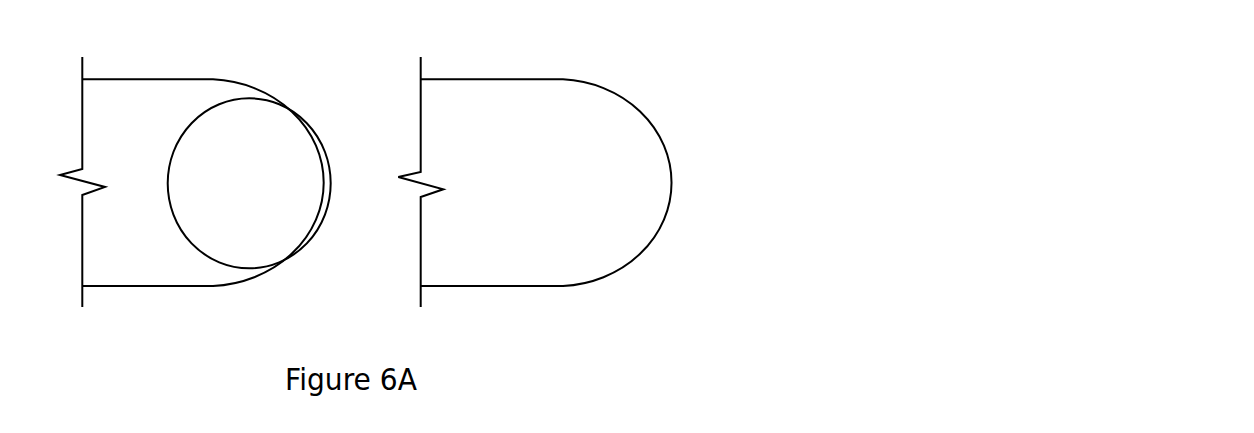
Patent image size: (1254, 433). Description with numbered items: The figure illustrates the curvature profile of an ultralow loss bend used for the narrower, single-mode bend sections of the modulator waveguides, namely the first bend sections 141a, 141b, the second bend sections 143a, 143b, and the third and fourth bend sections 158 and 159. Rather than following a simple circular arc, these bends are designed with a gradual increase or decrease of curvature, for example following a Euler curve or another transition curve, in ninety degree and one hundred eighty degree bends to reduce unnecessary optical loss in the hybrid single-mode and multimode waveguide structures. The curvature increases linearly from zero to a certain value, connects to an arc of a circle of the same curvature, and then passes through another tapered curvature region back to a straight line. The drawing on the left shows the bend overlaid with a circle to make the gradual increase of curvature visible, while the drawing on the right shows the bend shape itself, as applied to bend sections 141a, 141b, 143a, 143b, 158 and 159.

The first bend section 141a is at (636, 182).
The first bend section 141b is at (636, 182).
The second bend section 143a is at (636, 182).
The second bend section 143b is at (636, 182).
The third bend section 158 is at (636, 182).
The fourth bend section 159 is at (722, 218).